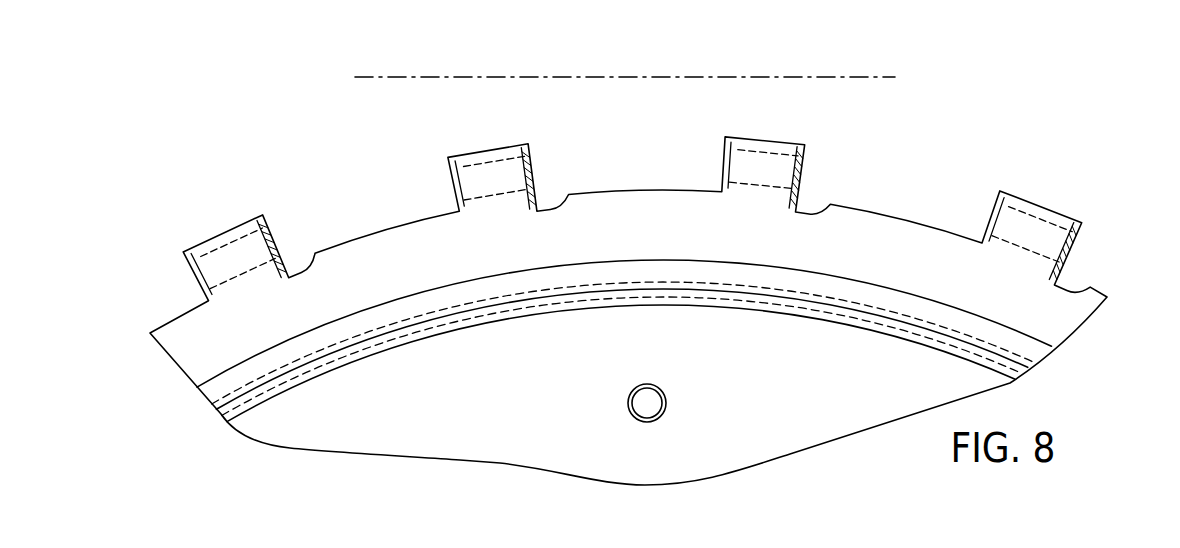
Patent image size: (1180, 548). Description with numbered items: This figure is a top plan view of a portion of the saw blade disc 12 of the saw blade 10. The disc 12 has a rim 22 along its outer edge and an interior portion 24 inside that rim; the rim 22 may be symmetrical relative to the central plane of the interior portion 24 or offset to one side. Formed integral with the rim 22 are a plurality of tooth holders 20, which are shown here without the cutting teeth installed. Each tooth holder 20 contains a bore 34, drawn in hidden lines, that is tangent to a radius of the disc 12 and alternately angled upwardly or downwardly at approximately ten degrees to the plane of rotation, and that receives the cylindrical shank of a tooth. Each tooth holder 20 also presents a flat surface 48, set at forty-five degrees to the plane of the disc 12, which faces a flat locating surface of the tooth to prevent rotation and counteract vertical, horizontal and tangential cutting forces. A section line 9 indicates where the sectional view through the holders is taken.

The section line 9- 9 is at (380, 76).
The saw blade 10 is at (82, 547).
The saw blade disc 12 is at (896, 218).
The tooth holder 20 is at (230, 224).
The rim 22 is at (884, 273).
The interior portion 24 is at (841, 380).
The bore 34 is at (240, 273).
The flat surface 48 is at (272, 227).